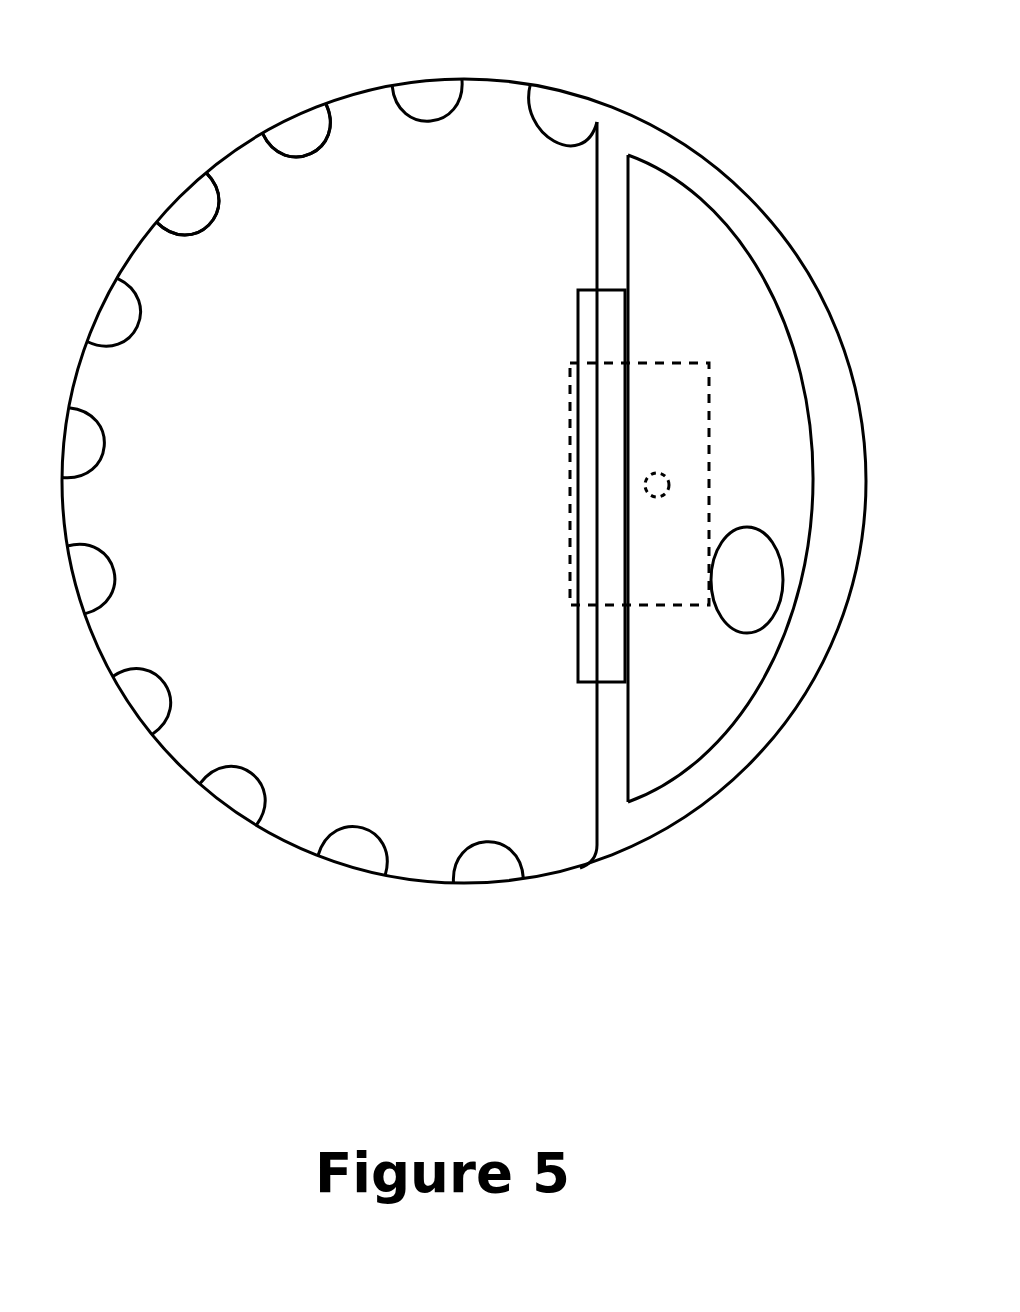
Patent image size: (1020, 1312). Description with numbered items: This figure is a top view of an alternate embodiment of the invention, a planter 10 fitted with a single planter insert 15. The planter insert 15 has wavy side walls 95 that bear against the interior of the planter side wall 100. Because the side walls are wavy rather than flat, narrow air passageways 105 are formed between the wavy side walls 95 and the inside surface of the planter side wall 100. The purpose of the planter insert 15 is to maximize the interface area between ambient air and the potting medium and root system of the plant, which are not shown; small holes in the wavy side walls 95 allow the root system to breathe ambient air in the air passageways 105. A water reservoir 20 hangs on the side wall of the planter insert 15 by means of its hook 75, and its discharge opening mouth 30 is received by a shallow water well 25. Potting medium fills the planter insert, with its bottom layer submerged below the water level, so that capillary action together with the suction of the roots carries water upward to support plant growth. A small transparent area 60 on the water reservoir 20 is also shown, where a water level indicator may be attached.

The planter 10 is at (733, 182).
The planter insert 15 is at (597, 180).
The water reservoir 20 is at (770, 280).
The shallow water well 25 is at (663, 610).
The discharge opening mouth 30 is at (643, 487).
The small transparent area 60 is at (745, 633).
The hook 75 is at (577, 638).
The wavy side walls 95 is at (198, 227).
The planter side wall 100 is at (287, 120).
The narrow air passageways 105 is at (198, 207).